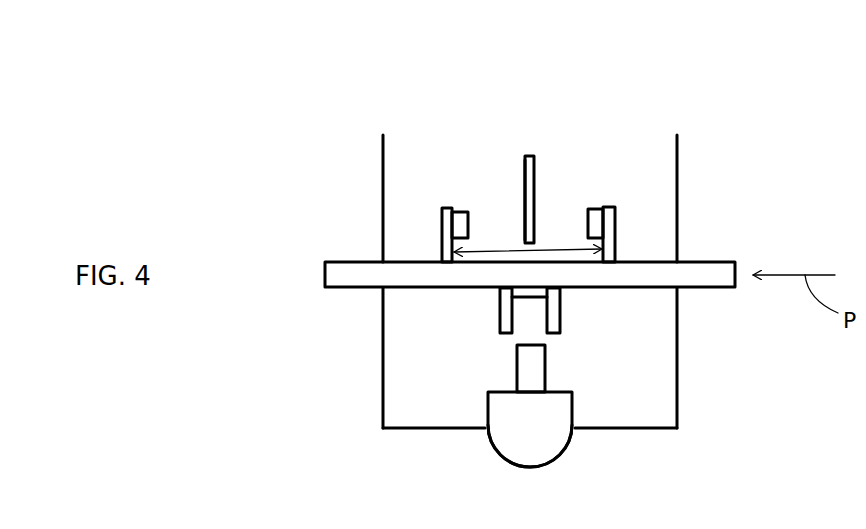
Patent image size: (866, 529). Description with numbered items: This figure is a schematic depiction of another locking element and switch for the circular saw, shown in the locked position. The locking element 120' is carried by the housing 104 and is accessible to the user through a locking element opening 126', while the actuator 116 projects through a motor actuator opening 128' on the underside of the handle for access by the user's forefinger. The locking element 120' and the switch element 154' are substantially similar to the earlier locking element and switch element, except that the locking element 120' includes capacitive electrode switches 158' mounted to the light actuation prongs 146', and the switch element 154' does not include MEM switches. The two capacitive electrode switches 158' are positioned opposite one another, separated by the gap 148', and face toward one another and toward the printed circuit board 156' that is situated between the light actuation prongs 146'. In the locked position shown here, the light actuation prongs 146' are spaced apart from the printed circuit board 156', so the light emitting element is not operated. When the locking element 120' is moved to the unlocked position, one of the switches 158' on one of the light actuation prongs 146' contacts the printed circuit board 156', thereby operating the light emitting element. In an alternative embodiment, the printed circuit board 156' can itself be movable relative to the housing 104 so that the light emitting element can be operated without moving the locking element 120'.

The housing 104 is at (677, 382).
The actuator 116 is at (520, 437).
The locking element 120' is at (561, 224).
The locking element opening 126' is at (555, 281).
The motor actuator opening 128' is at (563, 448).
The light actuation prongs 146' is at (534, 225).
The gap 148' is at (572, 172).
The switch element 154' is at (568, 168).
The printed circuit board 156' is at (512, 166).
The capacitive electrode switches 158' is at (547, 194).